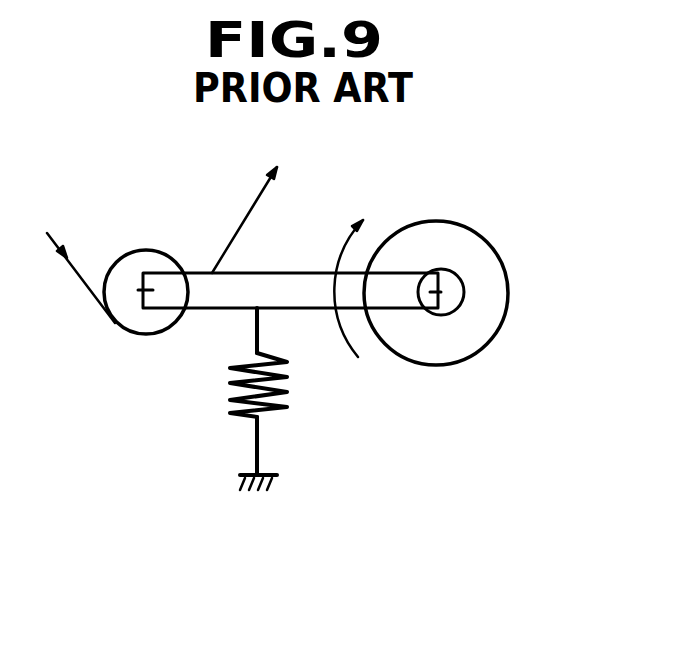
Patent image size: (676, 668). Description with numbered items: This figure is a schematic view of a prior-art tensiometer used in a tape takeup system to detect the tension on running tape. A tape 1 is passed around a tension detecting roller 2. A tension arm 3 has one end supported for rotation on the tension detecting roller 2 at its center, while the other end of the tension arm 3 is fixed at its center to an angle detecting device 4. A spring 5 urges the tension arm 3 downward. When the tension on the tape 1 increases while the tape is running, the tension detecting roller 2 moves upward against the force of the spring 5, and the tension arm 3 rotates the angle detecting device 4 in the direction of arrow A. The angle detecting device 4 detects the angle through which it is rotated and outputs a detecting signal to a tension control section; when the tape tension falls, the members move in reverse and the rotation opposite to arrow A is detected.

The tape 1 is at (247, 215).
The tension detecting roller 2 is at (140, 250).
The tension arm 3 is at (292, 285).
The angle detecting device 4 is at (487, 272).
The spring 5 is at (233, 383).
The arrow A is at (335, 258).